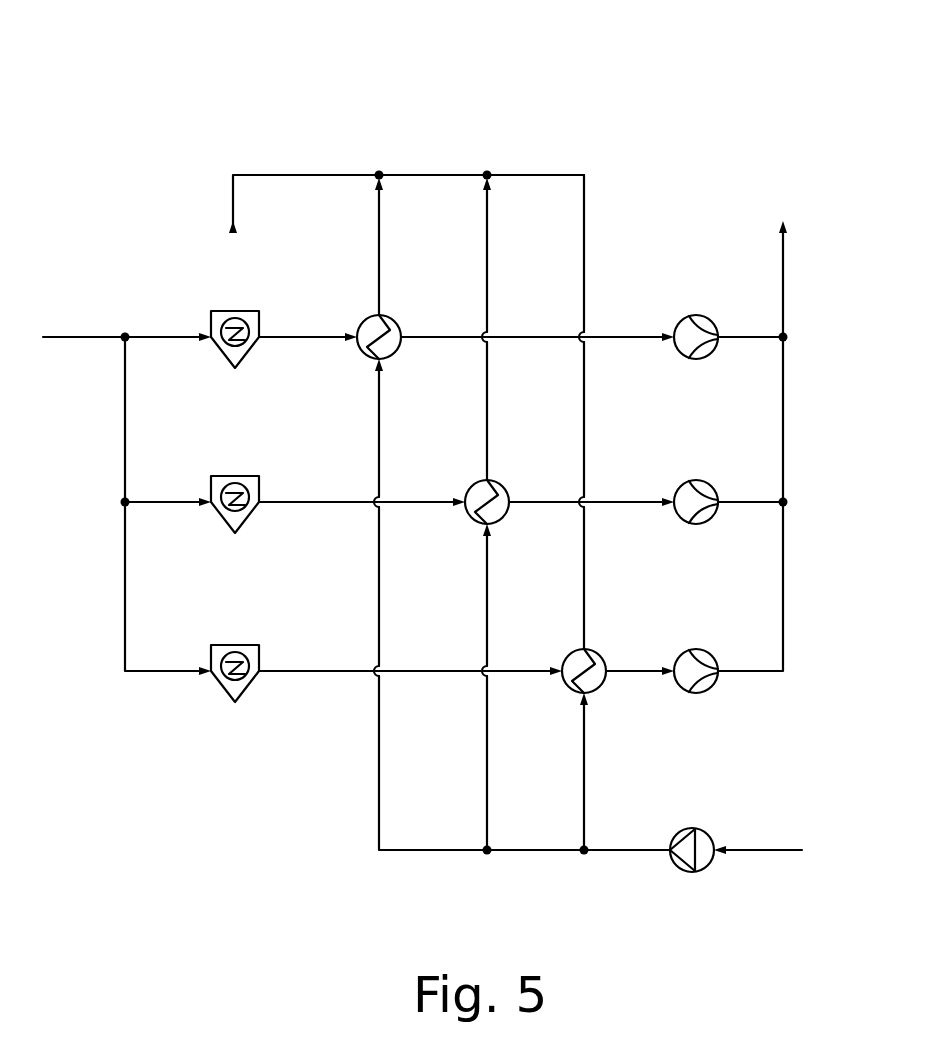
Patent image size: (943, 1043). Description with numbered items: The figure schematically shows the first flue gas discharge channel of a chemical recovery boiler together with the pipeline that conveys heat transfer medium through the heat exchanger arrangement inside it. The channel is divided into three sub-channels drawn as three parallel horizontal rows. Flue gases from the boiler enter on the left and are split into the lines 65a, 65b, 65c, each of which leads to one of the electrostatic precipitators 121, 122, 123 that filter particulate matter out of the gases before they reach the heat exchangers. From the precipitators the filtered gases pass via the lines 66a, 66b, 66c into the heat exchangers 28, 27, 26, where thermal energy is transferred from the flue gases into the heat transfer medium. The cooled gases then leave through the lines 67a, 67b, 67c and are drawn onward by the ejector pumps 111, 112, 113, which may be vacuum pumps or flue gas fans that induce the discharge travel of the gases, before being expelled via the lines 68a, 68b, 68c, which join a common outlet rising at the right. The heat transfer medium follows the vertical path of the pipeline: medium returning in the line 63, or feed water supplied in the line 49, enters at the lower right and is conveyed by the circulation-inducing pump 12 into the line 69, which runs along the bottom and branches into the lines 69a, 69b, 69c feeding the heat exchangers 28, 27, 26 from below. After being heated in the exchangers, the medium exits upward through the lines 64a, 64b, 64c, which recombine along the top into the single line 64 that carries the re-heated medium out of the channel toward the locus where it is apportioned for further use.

The pump 12 is at (694, 829).
The heat exchanger 26 is at (599, 687).
The heat exchanger 27 is at (502, 518).
The heat exchanger 28 is at (394, 353).
The line 49 is at (760, 876).
The line 63 is at (770, 852).
The line 64 is at (233, 108).
The line 64a is at (379, 220).
The line 64b is at (487, 215).
The line 64c is at (584, 210).
The line 65a is at (164, 336).
The line 65b is at (164, 501).
The line 65c is at (164, 670).
The line 66a is at (302, 336).
The line 66b is at (314, 501).
The line 66c is at (312, 670).
The line 67a is at (622, 336).
The line 67b is at (622, 501).
The line 67c is at (631, 670).
The line 68a is at (742, 336).
The line 68b is at (742, 501).
The line 68c is at (742, 670).
The line 69 is at (627, 852).
The line 69a is at (379, 763).
The line 69b is at (487, 758).
The line 69c is at (584, 754).
The ejector pump 111 is at (681, 355).
The ejector pump 112 is at (681, 519).
The ejector pump 113 is at (711, 687).
The electrostatic precipitator 121 is at (244, 357).
The electrostatic precipitator 122 is at (244, 522).
The electrostatic precipitator 123 is at (244, 691).